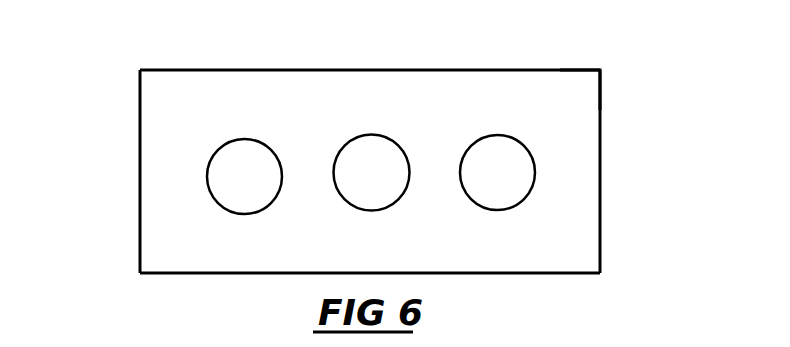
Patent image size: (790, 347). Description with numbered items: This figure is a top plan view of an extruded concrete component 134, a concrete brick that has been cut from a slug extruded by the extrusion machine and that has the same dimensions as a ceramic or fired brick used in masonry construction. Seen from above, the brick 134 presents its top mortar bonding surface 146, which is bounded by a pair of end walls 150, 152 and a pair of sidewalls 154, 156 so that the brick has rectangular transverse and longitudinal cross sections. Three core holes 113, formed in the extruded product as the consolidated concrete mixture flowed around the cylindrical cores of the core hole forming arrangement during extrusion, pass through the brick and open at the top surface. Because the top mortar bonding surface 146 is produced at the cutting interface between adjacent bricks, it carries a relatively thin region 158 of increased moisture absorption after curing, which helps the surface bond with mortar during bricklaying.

The core holes 113 is at (343, 148).
The extruded concrete component 134 is at (614, 99).
The top mortar bonding surface 146 is at (578, 72).
The end wall 150 is at (600, 160).
The end wall 152 is at (140, 153).
The sidewall 154 is at (282, 70).
The sidewall 156 is at (243, 276).
The moisture absorption region 158 is at (590, 214).